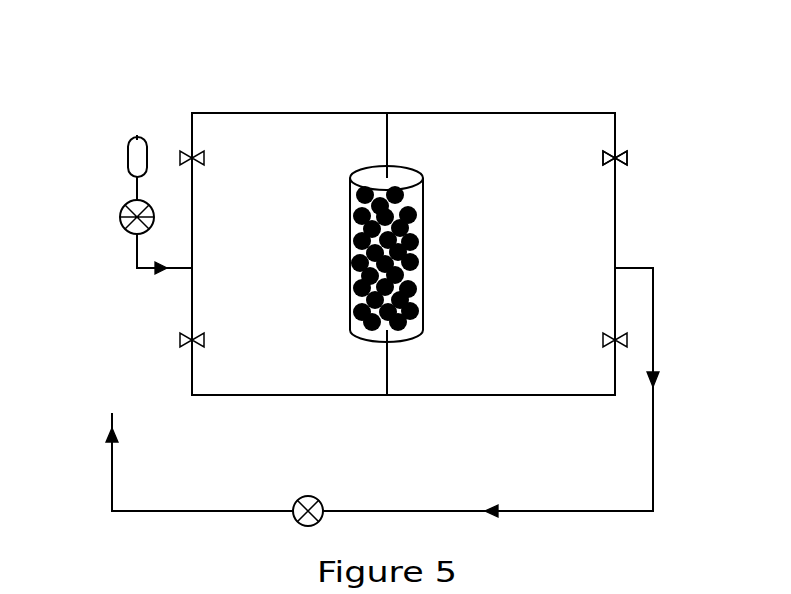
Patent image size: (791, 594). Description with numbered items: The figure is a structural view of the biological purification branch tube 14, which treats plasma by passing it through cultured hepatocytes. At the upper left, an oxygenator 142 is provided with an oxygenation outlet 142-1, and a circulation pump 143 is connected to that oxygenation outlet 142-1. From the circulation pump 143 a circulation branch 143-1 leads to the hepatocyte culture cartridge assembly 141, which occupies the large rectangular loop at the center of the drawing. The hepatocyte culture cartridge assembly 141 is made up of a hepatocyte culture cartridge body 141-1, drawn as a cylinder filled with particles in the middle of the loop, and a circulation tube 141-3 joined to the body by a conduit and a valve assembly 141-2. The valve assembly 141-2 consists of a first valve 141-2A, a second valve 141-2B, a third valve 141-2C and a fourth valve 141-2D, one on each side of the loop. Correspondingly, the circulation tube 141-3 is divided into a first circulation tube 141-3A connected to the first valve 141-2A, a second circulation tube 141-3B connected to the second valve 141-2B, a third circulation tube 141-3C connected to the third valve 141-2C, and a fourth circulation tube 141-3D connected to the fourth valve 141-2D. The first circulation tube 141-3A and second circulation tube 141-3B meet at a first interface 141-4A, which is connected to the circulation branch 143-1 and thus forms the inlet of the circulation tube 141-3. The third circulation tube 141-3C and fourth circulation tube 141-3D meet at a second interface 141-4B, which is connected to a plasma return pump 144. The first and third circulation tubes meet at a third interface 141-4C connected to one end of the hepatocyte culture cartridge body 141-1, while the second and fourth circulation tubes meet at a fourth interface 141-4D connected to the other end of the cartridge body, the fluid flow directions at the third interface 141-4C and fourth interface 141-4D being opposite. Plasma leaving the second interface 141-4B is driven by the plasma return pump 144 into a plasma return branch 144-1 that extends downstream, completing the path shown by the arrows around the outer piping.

The biological purification branch tube 14 is at (507, 157).
The hepatocyte culture cartridge assembly 141 is at (398, 263).
The hepatocyte culture cartridge body 141-1 is at (417, 310).
The valve assembly 141-2 is at (628, 158).
The first valve 141-2A is at (208, 157).
The second valve 141-2B is at (603, 157).
The third valve 141-2C is at (203, 340).
The fourth valve 141-2D is at (605, 340).
The circulation tube 141-3 is at (318, 113).
The first circulation tube 141-3A is at (277, 113).
The second circulation tube 141-3B is at (520, 76).
The third circulation tube 141-3C is at (277, 395).
The fourth circulation tube 141-3D is at (550, 395).
The first interface 141-4A is at (193, 270).
The second interface 141-4B is at (615, 268).
The third interface 141-4C is at (403, 113).
The fourth interface 141-4D is at (402, 395).
The oxygenator 142 is at (135, 167).
The oxygenation outlet 142-1 is at (138, 133).
The circulation pump 143 is at (142, 217).
The circulation branch 143-1 is at (137, 265).
The plasma return pump 144 is at (310, 497).
The plasma return branch 144-1 is at (113, 497).